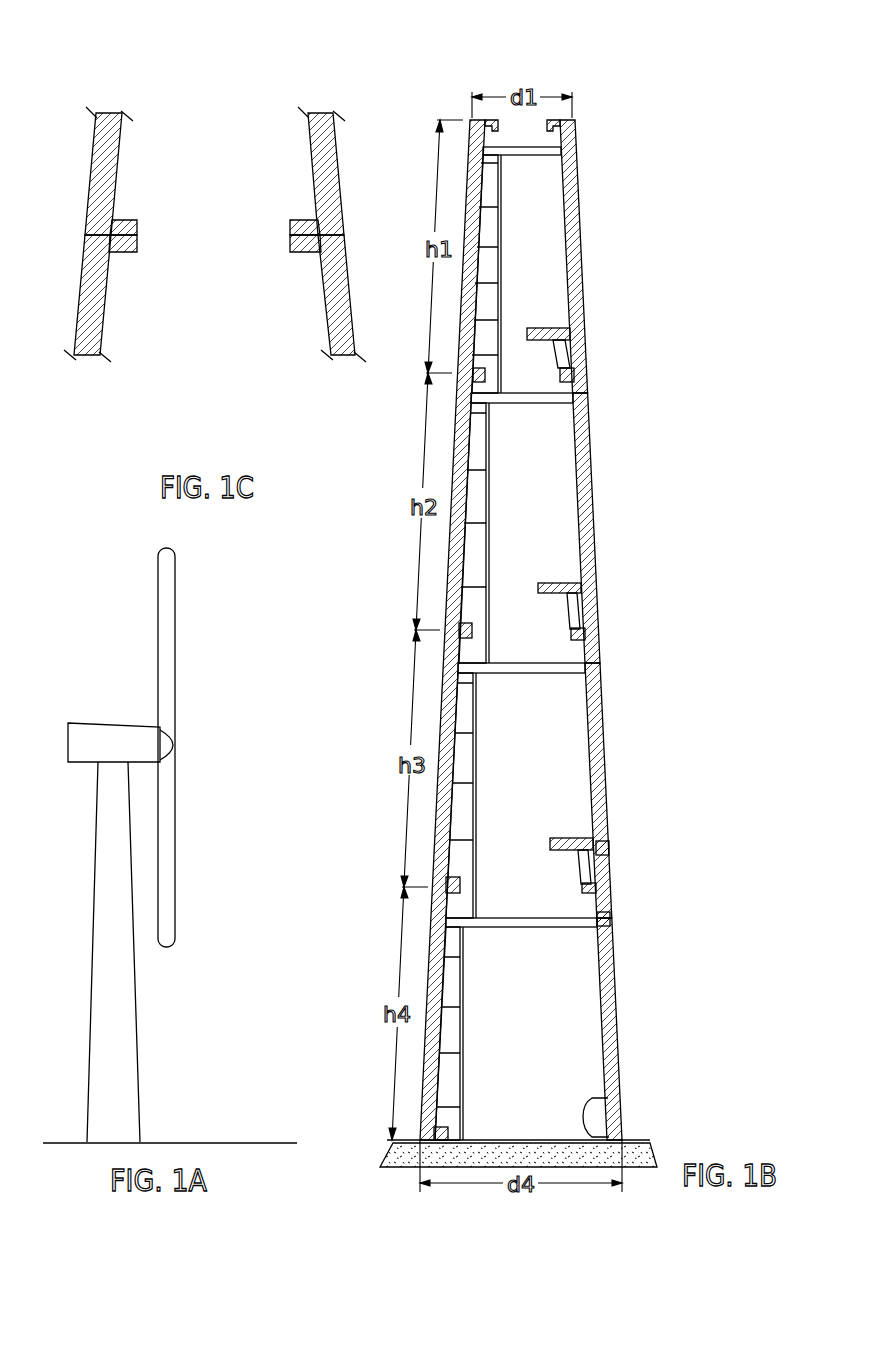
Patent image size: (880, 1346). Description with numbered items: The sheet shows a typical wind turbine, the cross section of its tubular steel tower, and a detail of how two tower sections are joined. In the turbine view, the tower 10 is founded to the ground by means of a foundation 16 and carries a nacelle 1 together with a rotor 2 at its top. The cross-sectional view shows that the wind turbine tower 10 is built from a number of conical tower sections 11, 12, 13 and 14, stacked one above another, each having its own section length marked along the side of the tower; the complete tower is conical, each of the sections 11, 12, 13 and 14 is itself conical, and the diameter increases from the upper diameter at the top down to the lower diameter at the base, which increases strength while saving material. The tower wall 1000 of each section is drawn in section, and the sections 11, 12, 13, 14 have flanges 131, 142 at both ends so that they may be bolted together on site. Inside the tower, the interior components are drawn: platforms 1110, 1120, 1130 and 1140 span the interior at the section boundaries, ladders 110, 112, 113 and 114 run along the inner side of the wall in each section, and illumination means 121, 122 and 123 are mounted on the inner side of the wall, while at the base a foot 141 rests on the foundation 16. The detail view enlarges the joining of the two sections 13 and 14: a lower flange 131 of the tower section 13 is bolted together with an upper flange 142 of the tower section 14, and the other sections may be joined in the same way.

In FIG. 1A, the nacelle 1 is at (92, 723).
In FIG. 1A, the rotor 2 is at (222, 774).
In FIG. 1A, the tower 10 is at (135, 1058).
In FIG. 1B, the tower 10 is at (540, 590).
In FIG. 1B, the tower section 11 is at (593, 256).
In FIG. 1B, the tower section 12 is at (602, 528).
In FIG. 1C, the tower section 13 is at (214, 144).
In FIG. 1B, the tower section 13 is at (603, 790).
In FIG. 1C, the tower section 14 is at (204, 344).
In FIG. 1B, the tower section 14 is at (599, 1011).
In FIG. 1B, the foundation 16 is at (653, 1140).
In FIG. 1B, the first inner tube 110 is at (502, 267).
In FIG. 1B, the ladder 112 is at (490, 510).
In FIG. 1B, the ladder 113 is at (478, 768).
In FIG. 1B, the ladder 114 is at (462, 1033).
In FIG. 1B, the illumination means 121 is at (540, 330).
In FIG. 1B, the illumination means 122 is at (560, 578).
In FIG. 1B, the illumination means 123 is at (573, 834).
In FIG. 1C, the lower flange 131 is at (126, 220).
In FIG. 1B, the lower flange 131 is at (610, 852).
In FIG. 1B, the foot bracket 141 is at (590, 1098).
In FIG. 1C, the upper flange 142 is at (131, 253).
In FIG. 1B, the upper flange 142 is at (600, 920).
In FIG. 1B, the tower wall 1000 is at (472, 568).
In FIG. 1B, the platform 1110 is at (547, 157).
In FIG. 1B, the platform 1120 is at (557, 407).
In FIG. 1B, the platform 1130 is at (557, 673).
In FIG. 1B, the platform 1140 is at (555, 927).